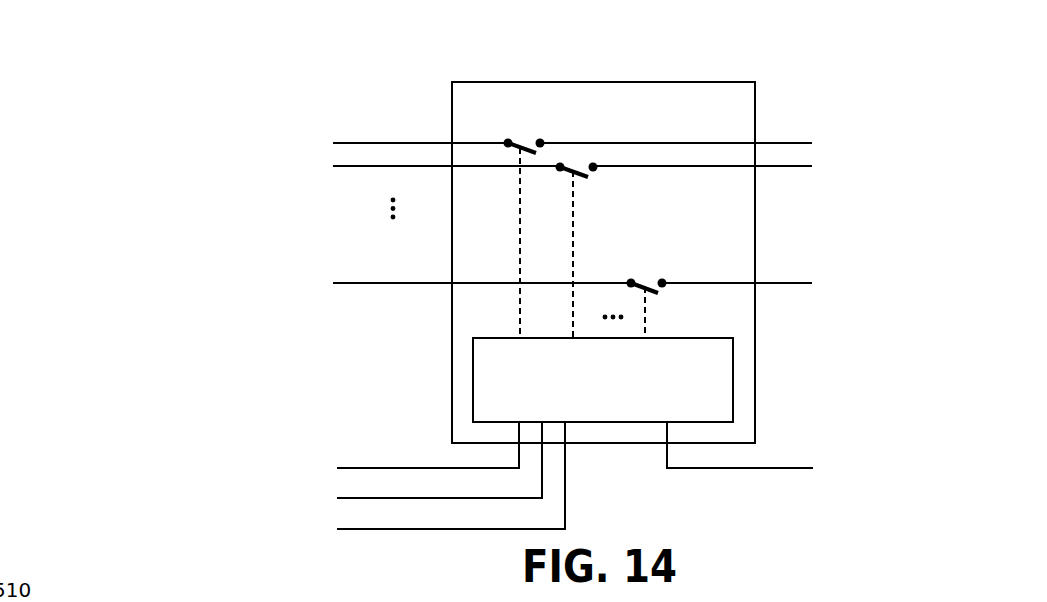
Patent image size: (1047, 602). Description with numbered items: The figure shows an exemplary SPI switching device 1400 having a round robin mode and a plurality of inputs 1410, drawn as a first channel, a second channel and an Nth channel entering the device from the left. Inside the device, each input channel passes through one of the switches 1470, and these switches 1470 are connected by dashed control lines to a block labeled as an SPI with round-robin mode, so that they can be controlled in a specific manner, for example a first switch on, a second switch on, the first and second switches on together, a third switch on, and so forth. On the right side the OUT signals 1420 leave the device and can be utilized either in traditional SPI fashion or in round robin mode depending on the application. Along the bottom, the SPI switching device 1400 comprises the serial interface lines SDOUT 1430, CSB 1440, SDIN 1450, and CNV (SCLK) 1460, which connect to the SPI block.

The SPI switching device 1400 is at (225, 71).
The inputs 1410 is at (207, 283).
The OUT signals 1420 is at (880, 283).
The SDOUT 1430 is at (893, 470).
The CSB 1440 is at (280, 463).
The SDIN 1450 is at (267, 492).
The CNV (SCLK) 1460 is at (205, 526).
The switches 1470 is at (642, 275).